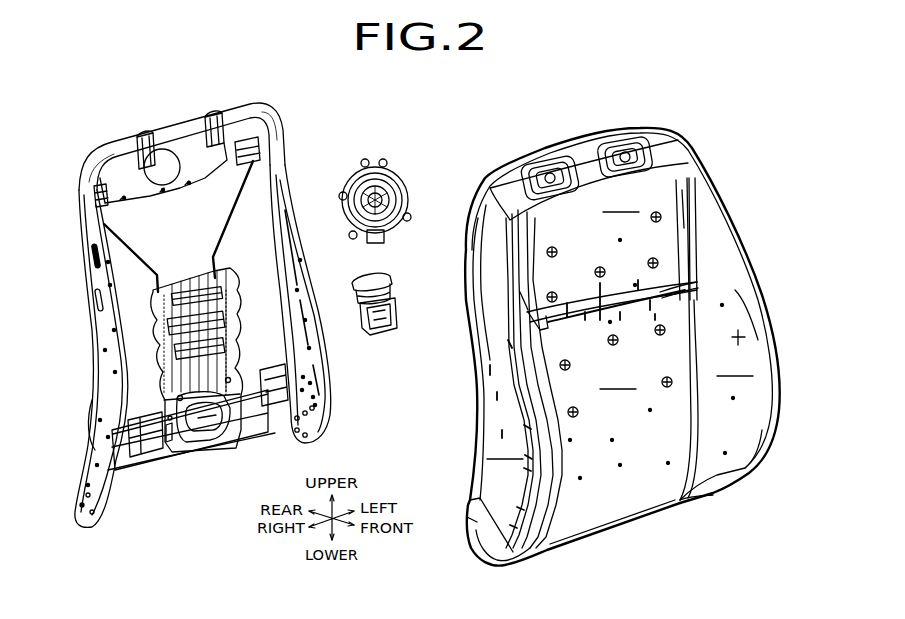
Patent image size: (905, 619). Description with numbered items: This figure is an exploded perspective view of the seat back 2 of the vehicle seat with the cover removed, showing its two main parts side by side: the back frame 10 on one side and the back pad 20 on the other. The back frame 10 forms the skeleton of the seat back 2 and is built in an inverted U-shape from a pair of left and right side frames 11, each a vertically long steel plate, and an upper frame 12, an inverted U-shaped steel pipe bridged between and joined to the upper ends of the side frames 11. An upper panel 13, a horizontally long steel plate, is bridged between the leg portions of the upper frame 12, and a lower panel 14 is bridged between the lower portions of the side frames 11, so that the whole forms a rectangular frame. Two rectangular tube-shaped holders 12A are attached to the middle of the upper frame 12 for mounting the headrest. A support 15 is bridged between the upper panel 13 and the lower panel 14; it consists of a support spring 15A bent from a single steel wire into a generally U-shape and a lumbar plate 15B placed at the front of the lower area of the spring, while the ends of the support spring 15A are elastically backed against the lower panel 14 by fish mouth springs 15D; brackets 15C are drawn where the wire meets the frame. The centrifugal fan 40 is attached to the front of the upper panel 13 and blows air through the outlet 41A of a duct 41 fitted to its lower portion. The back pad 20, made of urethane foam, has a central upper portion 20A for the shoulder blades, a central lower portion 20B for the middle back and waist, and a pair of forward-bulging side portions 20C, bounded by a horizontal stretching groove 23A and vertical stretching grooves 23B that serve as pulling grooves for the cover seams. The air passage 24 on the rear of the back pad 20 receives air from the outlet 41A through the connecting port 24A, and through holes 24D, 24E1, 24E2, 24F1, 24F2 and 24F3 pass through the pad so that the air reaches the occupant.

The seat back 2 is at (627, 329).
The back frame 10 is at (184, 298).
The side frame 11 is at (297, 262).
The upper frame 12 is at (182, 132).
The holder 12A is at (145, 135).
The upper panel 13 is at (202, 167).
The lower panel 14 is at (273, 377).
The support 15 is at (191, 363).
The support spring 15A is at (236, 232).
The lumbar plate 15B is at (222, 322).
The wire bracket 15C is at (253, 152).
The fish mouth spring 15D is at (212, 443).
The back pad 20 is at (622, 347).
The central upper portion 20A is at (608, 233).
The central lower portion 20B is at (618, 359).
The side portion 20C is at (717, 190).
The horizontal stretching groove 23A is at (733, 289).
The vertical stretching groove 23B is at (693, 227).
The air passage 24 is at (597, 303).
The connecting port 24A is at (582, 258).
The through hole 24D is at (657, 212).
The through hole 24E1 is at (604, 270).
The through hole 24E2 is at (618, 342).
The through hole 24F1 is at (657, 263).
The through hole 24F2 is at (665, 330).
The through hole 24F3 is at (672, 383).
The centrifugal fan 40 is at (397, 170).
The duct 41 is at (390, 323).
The outlet 41A is at (380, 334).